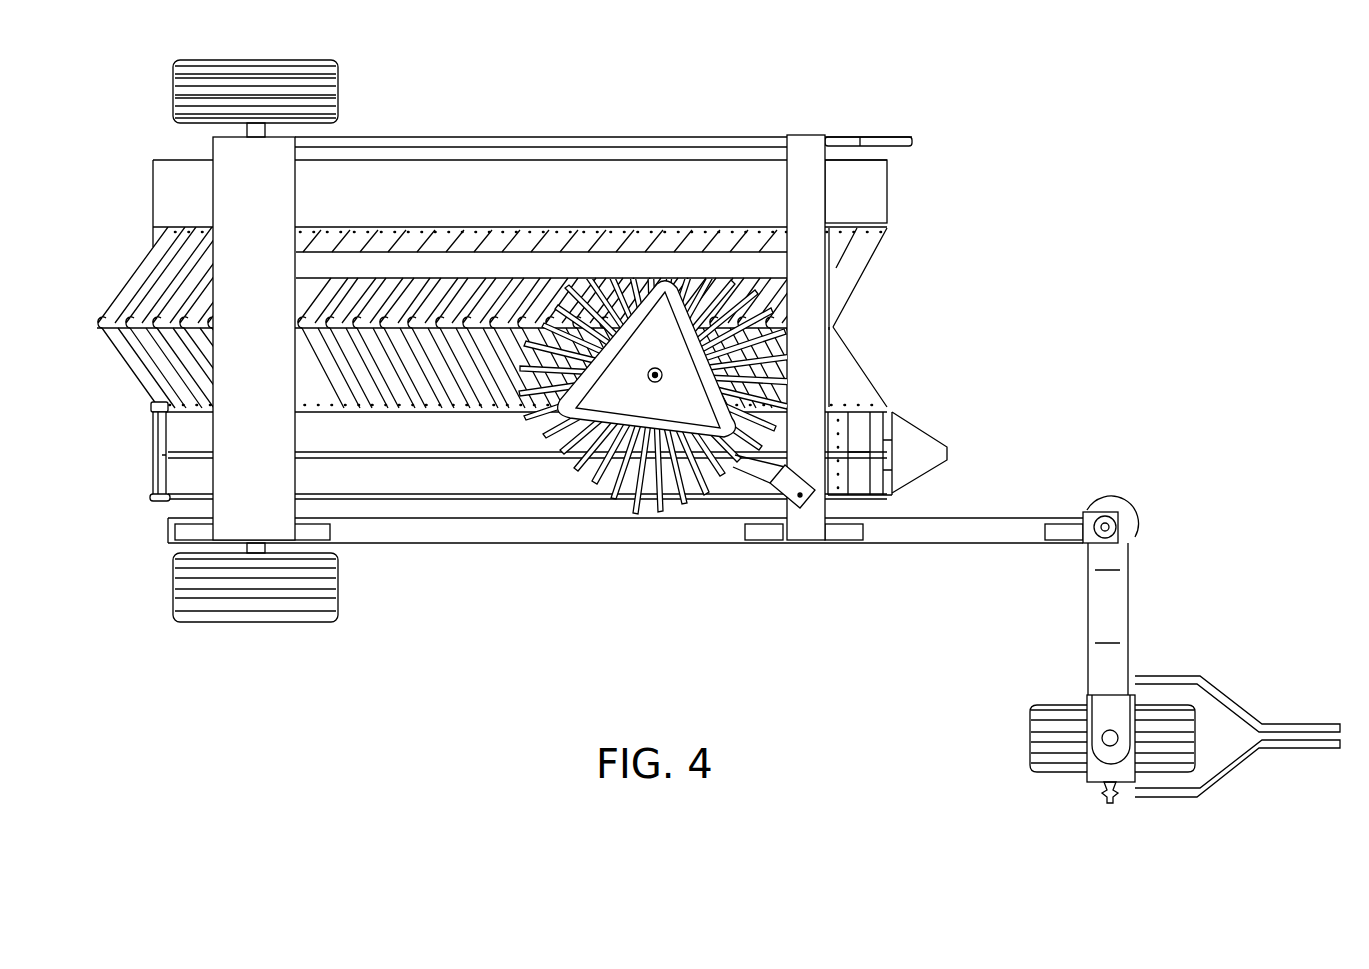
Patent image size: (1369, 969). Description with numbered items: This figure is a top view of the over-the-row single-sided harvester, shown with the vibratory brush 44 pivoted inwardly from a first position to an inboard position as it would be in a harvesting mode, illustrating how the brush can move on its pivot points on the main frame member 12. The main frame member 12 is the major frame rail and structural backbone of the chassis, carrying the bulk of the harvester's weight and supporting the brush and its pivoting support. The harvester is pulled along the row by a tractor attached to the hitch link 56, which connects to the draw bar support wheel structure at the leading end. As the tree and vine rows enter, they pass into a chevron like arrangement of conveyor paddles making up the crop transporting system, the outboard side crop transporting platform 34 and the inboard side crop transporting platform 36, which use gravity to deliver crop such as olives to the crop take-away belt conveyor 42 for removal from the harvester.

The main frame member 12 is at (560, 545).
The outboard side crop transporting platform 34 is at (868, 268).
The inboard side crop transporting platform 36 is at (851, 353).
The belt conveyor 42 is at (150, 482).
The vibratory brush 44 is at (662, 522).
The hitch link 56 is at (1157, 803).